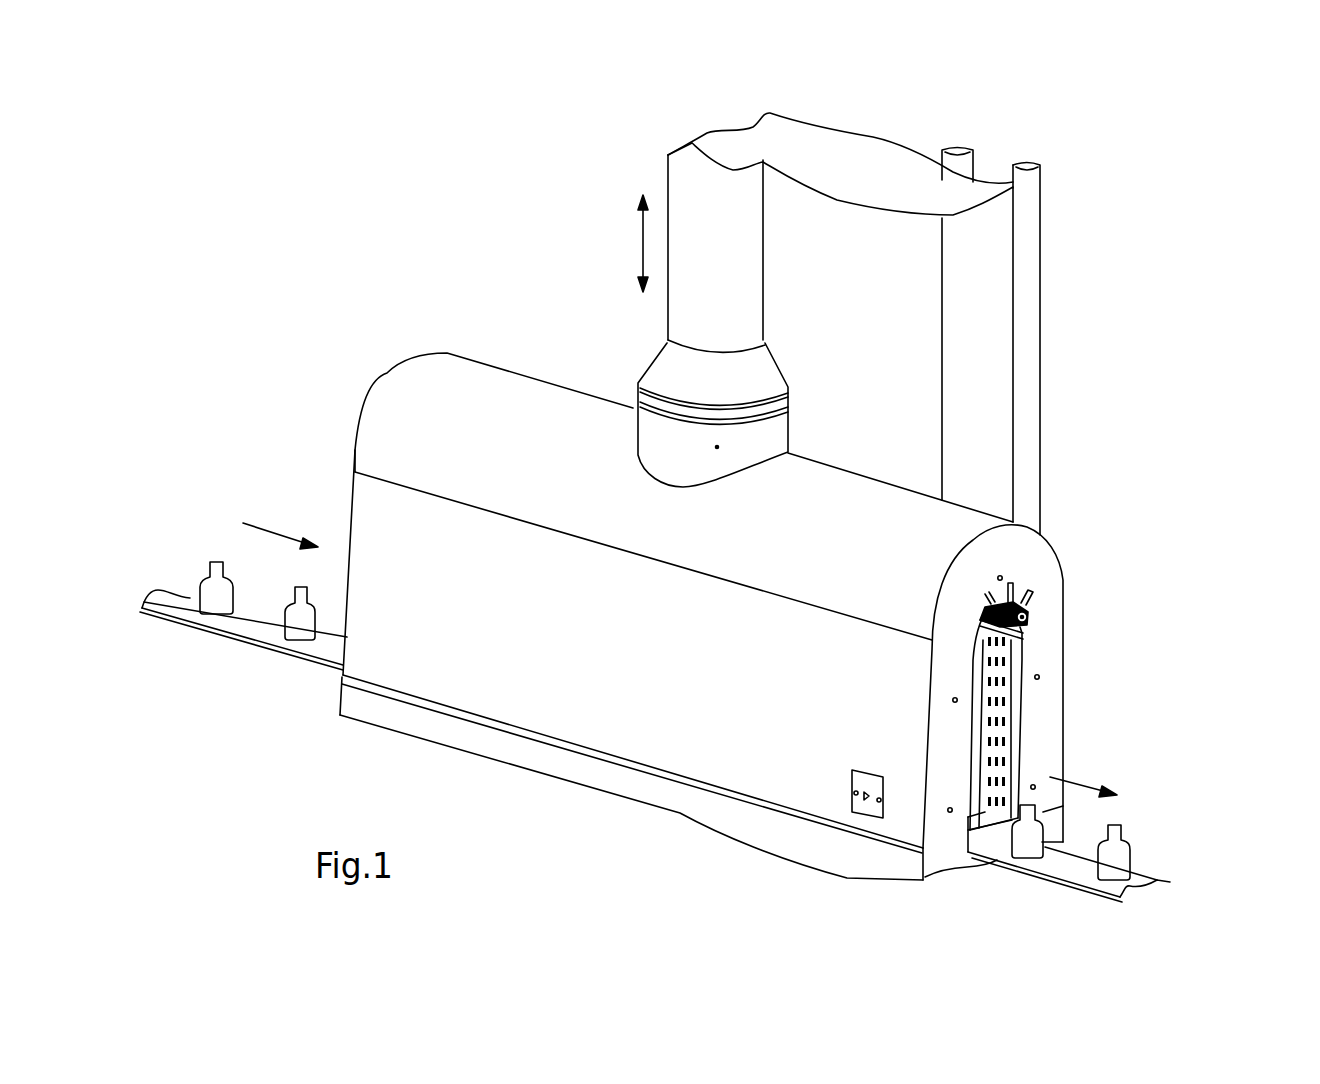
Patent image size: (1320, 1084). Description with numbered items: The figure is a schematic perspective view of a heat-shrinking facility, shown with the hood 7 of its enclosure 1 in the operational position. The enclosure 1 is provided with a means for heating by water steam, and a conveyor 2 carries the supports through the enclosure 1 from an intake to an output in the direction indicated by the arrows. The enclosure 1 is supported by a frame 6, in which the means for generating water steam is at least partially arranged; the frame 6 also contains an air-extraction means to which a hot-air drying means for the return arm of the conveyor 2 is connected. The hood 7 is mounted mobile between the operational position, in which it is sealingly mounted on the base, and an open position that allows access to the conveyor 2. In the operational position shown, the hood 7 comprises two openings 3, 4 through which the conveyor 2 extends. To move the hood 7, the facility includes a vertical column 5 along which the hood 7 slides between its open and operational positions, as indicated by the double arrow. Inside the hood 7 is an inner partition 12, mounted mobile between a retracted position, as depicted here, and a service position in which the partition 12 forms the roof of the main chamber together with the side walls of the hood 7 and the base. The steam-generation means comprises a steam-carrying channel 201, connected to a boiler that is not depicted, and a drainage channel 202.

The enclosure 1 is at (1137, 495).
The conveyor 2 is at (988, 843).
The opening 3 is at (348, 593).
The opening 4 is at (1013, 705).
The vertical column 5 is at (985, 340).
The frame 6 is at (627, 780).
The hood 7 is at (1040, 552).
The inner partition 12 is at (1007, 643).
The steam-carrying channel 201 is at (1034, 197).
The drainage channel 202 is at (950, 150).